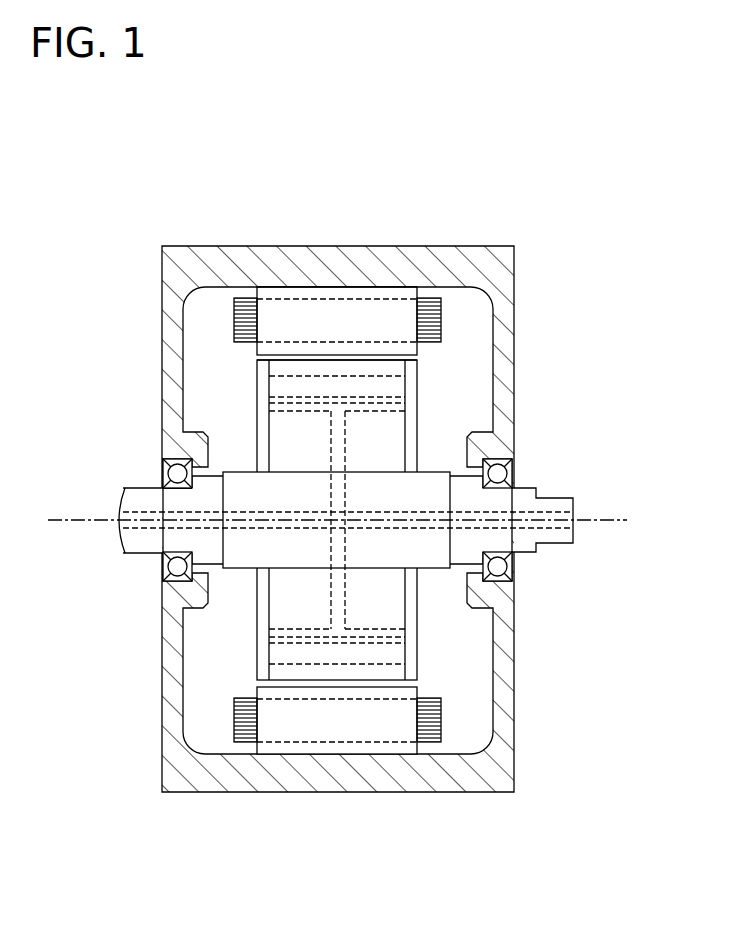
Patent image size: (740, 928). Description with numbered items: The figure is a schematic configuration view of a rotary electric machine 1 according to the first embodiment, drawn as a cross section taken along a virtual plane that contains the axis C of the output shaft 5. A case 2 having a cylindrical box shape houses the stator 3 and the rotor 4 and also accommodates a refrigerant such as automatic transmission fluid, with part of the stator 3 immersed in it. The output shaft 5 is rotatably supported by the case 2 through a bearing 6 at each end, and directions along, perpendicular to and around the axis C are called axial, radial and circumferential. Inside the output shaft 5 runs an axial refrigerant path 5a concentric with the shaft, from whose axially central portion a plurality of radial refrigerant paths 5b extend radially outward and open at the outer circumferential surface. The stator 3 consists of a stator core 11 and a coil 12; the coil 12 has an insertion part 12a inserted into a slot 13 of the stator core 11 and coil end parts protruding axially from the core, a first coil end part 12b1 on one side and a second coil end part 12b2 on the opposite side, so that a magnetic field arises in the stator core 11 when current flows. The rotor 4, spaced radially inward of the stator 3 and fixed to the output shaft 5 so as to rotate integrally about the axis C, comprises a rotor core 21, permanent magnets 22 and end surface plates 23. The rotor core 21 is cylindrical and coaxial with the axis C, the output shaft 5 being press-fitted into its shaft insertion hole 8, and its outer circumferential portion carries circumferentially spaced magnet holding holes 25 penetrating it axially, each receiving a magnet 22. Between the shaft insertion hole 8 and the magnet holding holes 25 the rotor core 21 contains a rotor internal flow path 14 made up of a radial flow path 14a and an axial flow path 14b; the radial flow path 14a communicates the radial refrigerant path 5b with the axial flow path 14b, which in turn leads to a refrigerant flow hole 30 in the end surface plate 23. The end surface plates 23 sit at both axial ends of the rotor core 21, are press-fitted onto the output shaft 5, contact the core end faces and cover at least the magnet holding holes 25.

The rotary electric machine 1 is at (355, 418).
The case 2 is at (467, 245).
The stator 3 is at (388, 451).
The rotor 4 is at (325, 516).
The output shaft 5 is at (351, 524).
The axial refrigerant path 5a is at (135, 515).
The radial refrigerant path 5b is at (347, 488).
The bearing 6 is at (168, 474).
The shaft insertion hole 8 is at (303, 567).
The stator core 11 is at (365, 293).
The coil 12 is at (388, 465).
The insertion part 12a is at (388, 298).
The first coil end part 12b1 is at (245, 298).
The second coil end part 12b2 is at (442, 317).
The slot 13 is at (373, 300).
The rotor internal flow path 14 is at (325, 557).
The radial flow path 14a is at (330, 448).
The axial flow path 14b is at (285, 415).
The rotor core 21 is at (388, 430).
The magnet 22 is at (262, 393).
The end surface plate 23 is at (258, 420).
The magnet holding hole 25 is at (310, 378).
The refrigerant flow hole 30 is at (283, 384).
The axis C is at (605, 518).